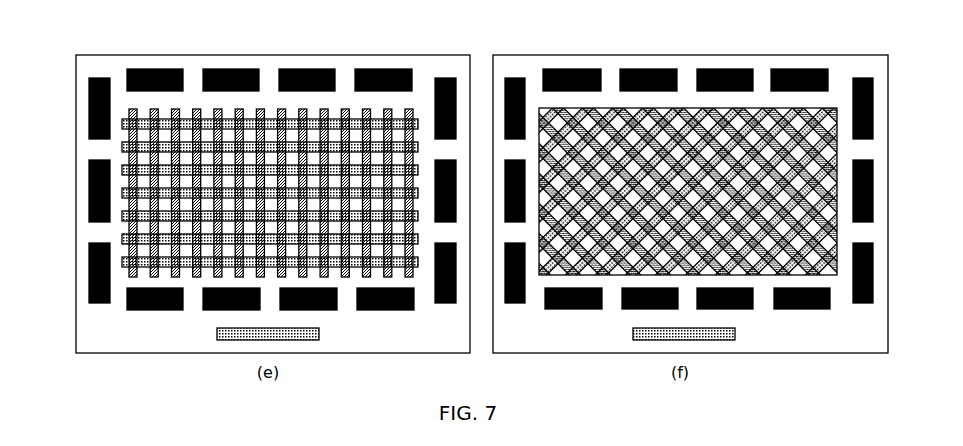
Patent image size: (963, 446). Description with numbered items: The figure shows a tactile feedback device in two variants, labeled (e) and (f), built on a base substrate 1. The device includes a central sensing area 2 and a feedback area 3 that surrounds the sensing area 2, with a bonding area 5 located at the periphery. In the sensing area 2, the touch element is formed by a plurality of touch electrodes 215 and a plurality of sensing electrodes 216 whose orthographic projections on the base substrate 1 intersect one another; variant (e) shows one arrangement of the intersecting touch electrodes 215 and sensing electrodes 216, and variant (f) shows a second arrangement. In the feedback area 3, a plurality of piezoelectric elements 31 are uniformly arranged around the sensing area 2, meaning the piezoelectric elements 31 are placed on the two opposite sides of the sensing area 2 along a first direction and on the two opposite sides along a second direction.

The base substrate 1 is at (452, 55).
The sensing area 2 is at (483, 217).
The feedback area 3 is at (88, 155).
The piezoelectric element 31 is at (803, 68).
The bonding area 5 is at (320, 334).
The touch electrodes 215 is at (145, 122).
The sensing electrodes 216 is at (197, 116).